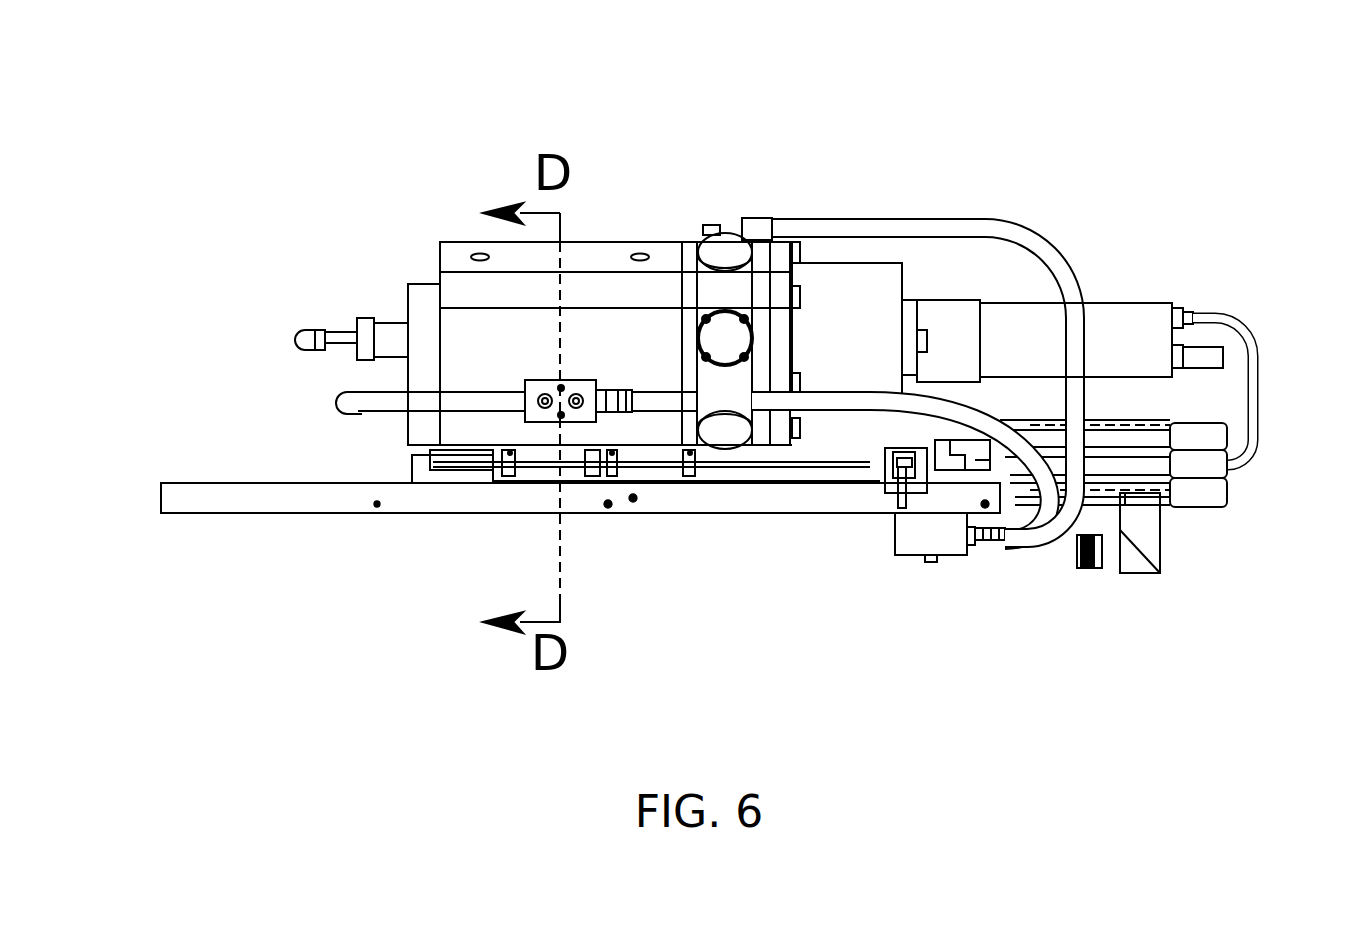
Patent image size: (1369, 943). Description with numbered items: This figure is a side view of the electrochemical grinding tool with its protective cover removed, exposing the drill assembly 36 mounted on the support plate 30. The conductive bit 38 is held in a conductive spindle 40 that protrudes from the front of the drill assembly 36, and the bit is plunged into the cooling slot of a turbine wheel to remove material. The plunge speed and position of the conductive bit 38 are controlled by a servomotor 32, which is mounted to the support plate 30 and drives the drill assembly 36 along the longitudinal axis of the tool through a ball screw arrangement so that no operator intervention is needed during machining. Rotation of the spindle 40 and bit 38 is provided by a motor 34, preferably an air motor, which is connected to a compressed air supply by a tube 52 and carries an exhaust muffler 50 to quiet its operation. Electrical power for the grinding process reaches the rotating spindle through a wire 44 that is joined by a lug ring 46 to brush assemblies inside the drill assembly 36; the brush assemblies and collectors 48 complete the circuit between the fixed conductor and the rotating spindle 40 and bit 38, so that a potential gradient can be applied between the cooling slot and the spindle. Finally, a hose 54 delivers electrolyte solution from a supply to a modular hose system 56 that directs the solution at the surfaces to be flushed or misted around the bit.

The support plate 30 is at (205, 500).
The servomotor 32 is at (1198, 462).
The motor 34 is at (1123, 327).
The drill assembly 36 is at (893, 140).
The conductive bit 38 is at (293, 333).
The conductive spindle 40 is at (367, 328).
The wire 44 is at (997, 227).
The lug ring 46 is at (755, 228).
The collectors 48 is at (707, 225).
The exhaust muffler 50 is at (1208, 356).
The tube 52 is at (1230, 330).
The hose 54 is at (866, 400).
The modular hose system 56 is at (422, 400).